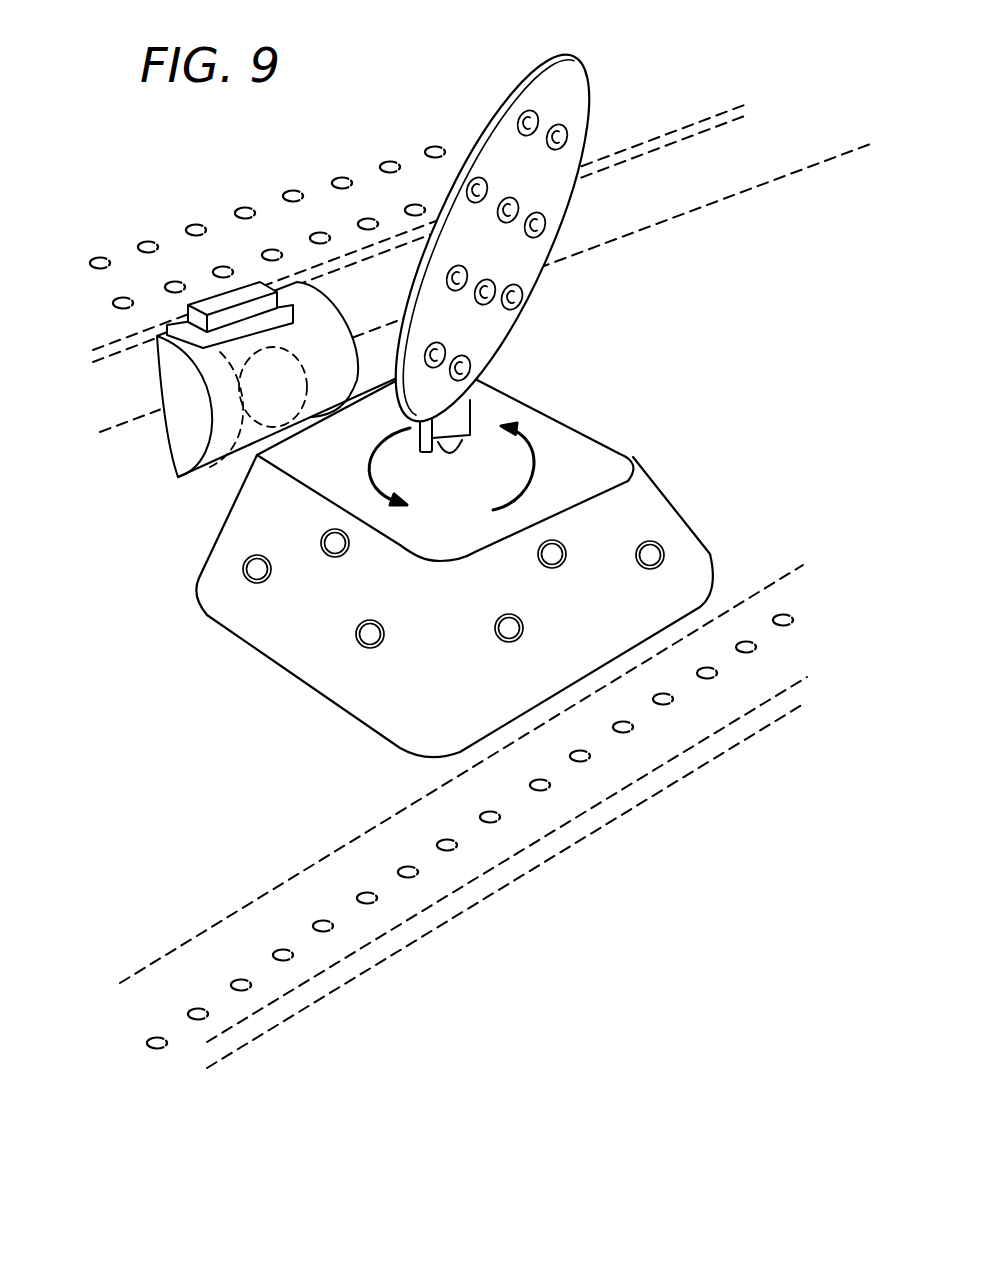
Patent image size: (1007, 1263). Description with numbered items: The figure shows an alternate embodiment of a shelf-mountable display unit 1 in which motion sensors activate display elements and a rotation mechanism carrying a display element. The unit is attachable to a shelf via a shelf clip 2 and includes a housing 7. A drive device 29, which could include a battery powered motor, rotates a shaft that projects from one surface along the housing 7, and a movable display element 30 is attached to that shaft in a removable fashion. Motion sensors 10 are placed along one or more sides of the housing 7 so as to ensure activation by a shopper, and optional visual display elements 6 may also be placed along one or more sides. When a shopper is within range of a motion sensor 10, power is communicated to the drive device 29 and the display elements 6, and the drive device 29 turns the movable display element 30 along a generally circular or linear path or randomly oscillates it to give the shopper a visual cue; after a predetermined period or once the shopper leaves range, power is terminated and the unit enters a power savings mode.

The shelf-mountable display unit 1 is at (652, 500).
The shelf clip 2 is at (250, 380).
The visual display elements 6 is at (257, 569).
The housing 7 is at (402, 713).
The motion sensors 10 is at (335, 543).
The drive device 29 is at (478, 406).
The movable display element 30 is at (563, 100).